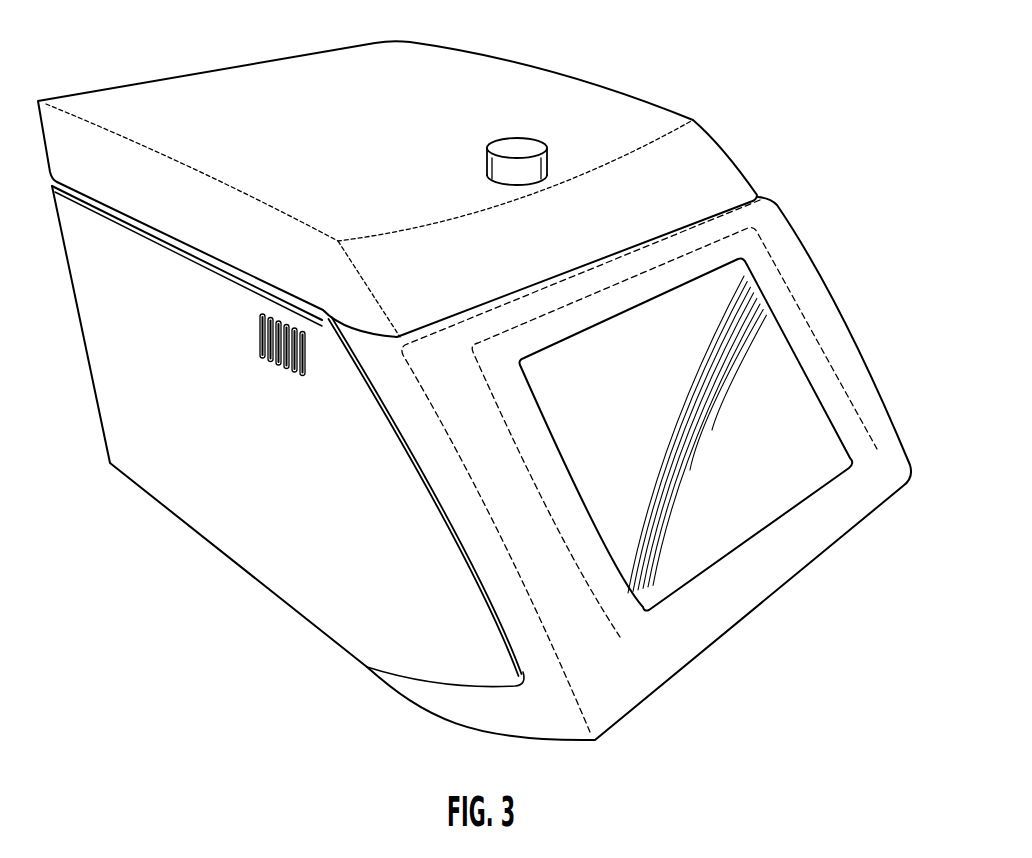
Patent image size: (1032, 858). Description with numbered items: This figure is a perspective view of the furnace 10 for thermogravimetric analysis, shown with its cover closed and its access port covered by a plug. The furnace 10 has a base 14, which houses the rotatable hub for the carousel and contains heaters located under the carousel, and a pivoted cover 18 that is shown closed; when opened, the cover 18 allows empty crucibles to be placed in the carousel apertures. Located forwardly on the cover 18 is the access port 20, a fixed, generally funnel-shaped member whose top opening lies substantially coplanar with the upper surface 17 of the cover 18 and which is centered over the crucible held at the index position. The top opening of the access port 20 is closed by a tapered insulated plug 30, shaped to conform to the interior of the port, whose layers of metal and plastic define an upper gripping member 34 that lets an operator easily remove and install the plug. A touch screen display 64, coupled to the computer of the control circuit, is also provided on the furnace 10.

The furnace 10 is at (474, 377).
The base 14 is at (481, 463).
The upper surface 17 is at (377, 187).
The cover 18 is at (397, 175).
The access port 20 is at (488, 182).
The insulated plug 30 is at (554, 122).
The upper gripping member 34 is at (546, 163).
The touch screen display 64 is at (675, 558).